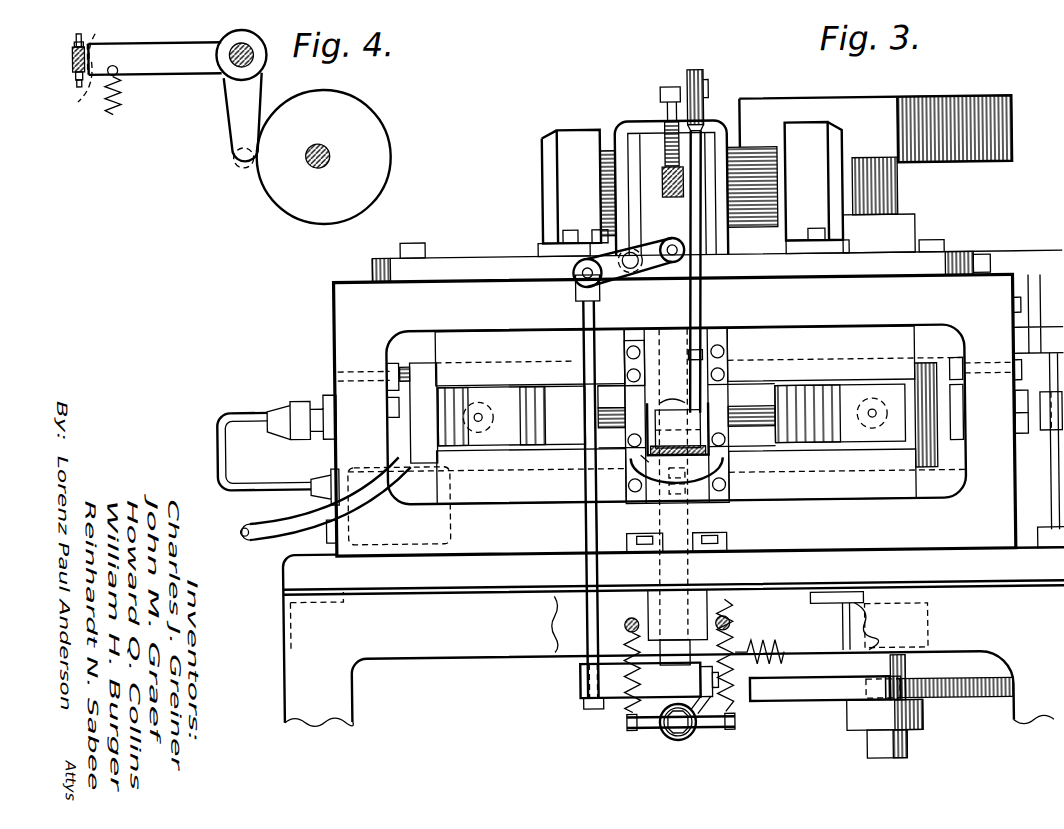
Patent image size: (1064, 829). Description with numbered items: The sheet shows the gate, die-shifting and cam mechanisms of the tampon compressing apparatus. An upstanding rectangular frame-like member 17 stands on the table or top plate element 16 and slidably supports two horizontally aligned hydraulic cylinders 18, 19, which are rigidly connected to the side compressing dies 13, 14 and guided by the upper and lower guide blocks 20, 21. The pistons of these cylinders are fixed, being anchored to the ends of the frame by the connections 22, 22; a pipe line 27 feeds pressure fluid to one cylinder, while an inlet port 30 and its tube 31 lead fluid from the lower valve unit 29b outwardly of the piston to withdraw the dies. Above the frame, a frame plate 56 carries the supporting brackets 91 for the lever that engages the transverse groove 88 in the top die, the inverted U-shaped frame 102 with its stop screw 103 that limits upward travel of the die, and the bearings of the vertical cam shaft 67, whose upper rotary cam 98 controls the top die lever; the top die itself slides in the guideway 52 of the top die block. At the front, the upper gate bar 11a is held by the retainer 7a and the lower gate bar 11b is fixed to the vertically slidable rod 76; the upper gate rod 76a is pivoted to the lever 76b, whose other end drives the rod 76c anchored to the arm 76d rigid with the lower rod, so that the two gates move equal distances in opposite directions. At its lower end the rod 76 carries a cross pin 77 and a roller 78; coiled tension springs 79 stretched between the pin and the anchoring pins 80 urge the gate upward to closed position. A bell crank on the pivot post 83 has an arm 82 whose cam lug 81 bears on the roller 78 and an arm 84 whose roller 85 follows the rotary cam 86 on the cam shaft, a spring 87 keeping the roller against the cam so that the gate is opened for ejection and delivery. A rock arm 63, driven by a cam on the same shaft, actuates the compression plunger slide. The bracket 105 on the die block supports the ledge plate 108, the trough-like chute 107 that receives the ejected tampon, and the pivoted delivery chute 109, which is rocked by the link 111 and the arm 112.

In FIG. 3, the retainer 7a is at (728, 360).
In FIG. 3, the upper gate bar 11a is at (650, 400).
In FIG. 3, the lower gate bar 11b is at (700, 500).
In FIG. 3, the side compressing die 13 is at (612, 427).
In FIG. 3, the side compressing die 14 is at (748, 420).
In FIG. 3, the top plate element 16 is at (283, 575).
In FIG. 3, the rectangular frame-like member 17 is at (335, 296).
In FIG. 3, the hydraulic cylinder 18 is at (420, 365).
In FIG. 3, the hydraulic cylinder 19 is at (928, 364).
In FIG. 3, the upper guide block 20 is at (536, 338).
In FIG. 3, the lower guide block 21 is at (540, 502).
In FIG. 3, the piston anchoring connection 22 is at (400, 439).
In FIG. 3, the pipe line 27 is at (242, 407).
In FIG. 3, the lower valve unit 29b is at (452, 519).
In FIG. 3, the inlet port 30 is at (480, 402).
In FIG. 3, the tube 31 is at (298, 519).
In FIG. 3, the guideway 52 is at (628, 368).
In FIG. 3, the frame plate 56 is at (960, 254).
In FIG. 3, the rock arm 63 is at (1013, 307).
In FIG. 4, the cam shaft 67 is at (340, 144).
In FIG. 3, the cam shaft 67 is at (902, 182).
In FIG. 4, the lower gate rod 76 is at (70, 55).
In FIG. 3, the lower gate rod 76 is at (688, 574).
In FIG. 3, the upper gate rod 76a is at (686, 262).
In FIG. 3, the lever 76b is at (602, 284).
In FIG. 3, the rod 76c is at (583, 540).
In FIG. 3, the arm 76d is at (577, 684).
In FIG. 4, the cross pin 77 is at (76, 76).
In FIG. 3, the cross pin 77 is at (698, 730).
In FIG. 4, the roller 78 is at (98, 33).
In FIG. 3, the roller 78 is at (666, 740).
In FIG. 3, the coiled tension spring 79 is at (625, 710).
In FIG. 3, the anchoring pin 80 is at (625, 620).
In FIG. 4, the cam lug 81 is at (78, 98).
In FIG. 3, the cam lug 81 is at (702, 704).
In FIG. 4, the bell crank arm 82 is at (165, 74).
In FIG. 4, the pivot post 83 is at (243, 48).
In FIG. 3, the pivot post 83 is at (902, 719).
In FIG. 4, the bell crank arm 84 is at (232, 110).
In FIG. 3, the bell crank arm 84 is at (798, 678).
In FIG. 4, the roller 85 is at (238, 168).
In FIG. 3, the roller 85 is at (898, 686).
In FIG. 4, the rotary cam 86 is at (268, 190).
In FIG. 3, the rotary cam 86 is at (972, 703).
In FIG. 4, the spring 87 is at (106, 112).
In FIG. 3, the spring 87 is at (766, 642).
In FIG. 3, the transverse groove 88 is at (675, 198).
In FIG. 3, the supporting bracket 91 is at (547, 165).
In FIG. 3, the rotary cam 98 is at (1017, 129).
In FIG. 3, the inverted U-shaped frame 102 is at (626, 125).
In FIG. 3, the stop screw 103 is at (666, 96).
In FIG. 3, the bracket 105 is at (716, 470).
In FIG. 3, the trough-like chute 107 is at (702, 448).
In FIG. 3, the ledge plate 108 is at (645, 458).
In FIG. 3, the delivery chute 109 is at (710, 408).
In FIG. 3, the link 111 is at (706, 286).
In FIG. 3, the arm 112 is at (709, 70).